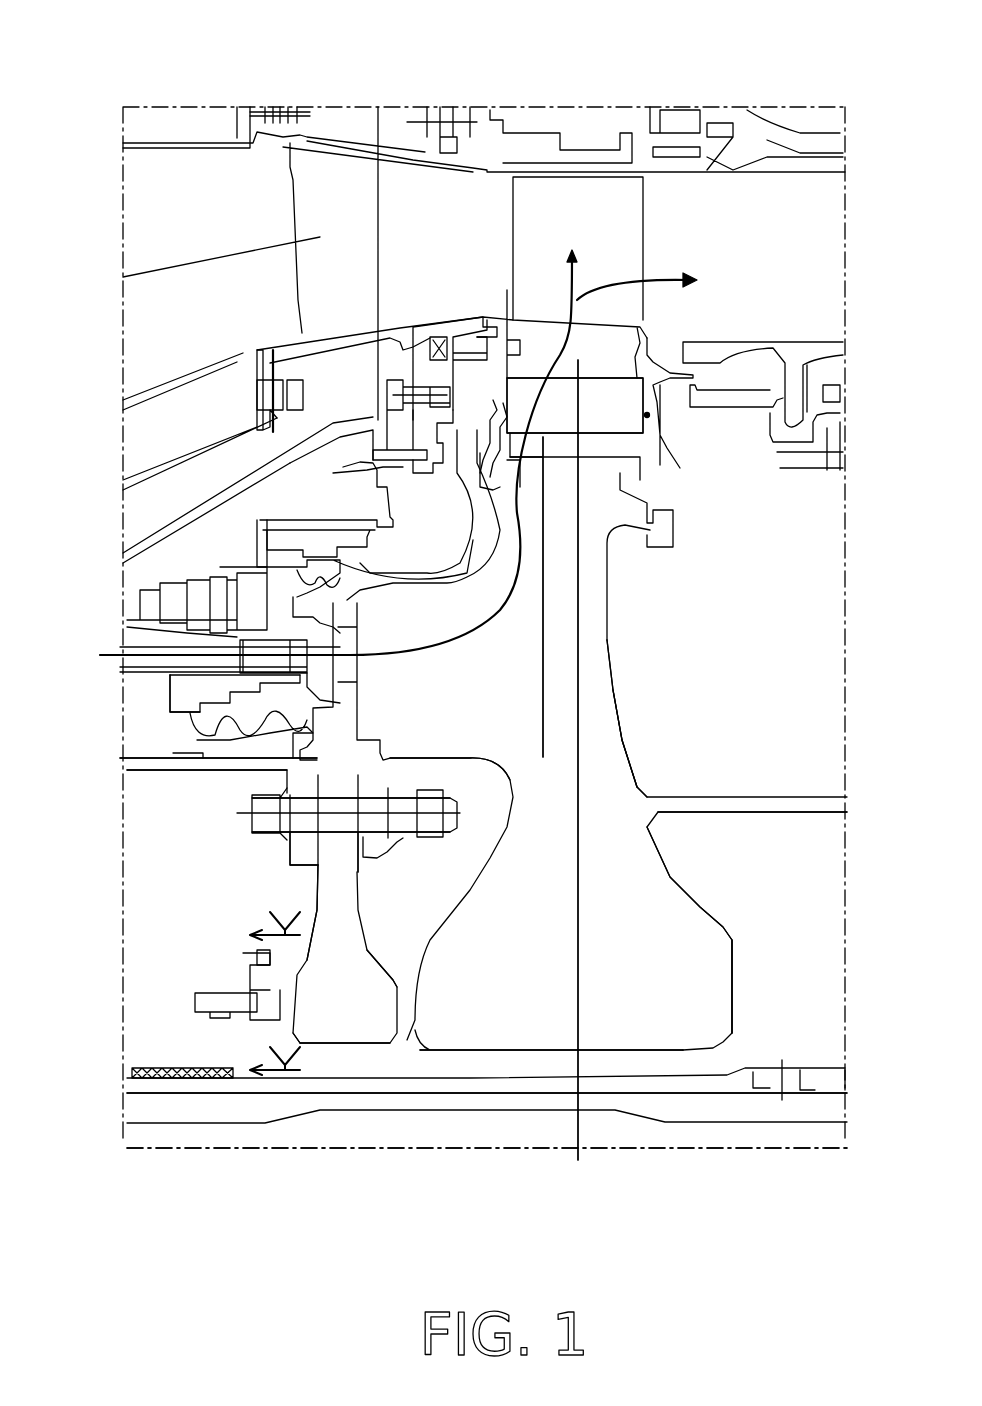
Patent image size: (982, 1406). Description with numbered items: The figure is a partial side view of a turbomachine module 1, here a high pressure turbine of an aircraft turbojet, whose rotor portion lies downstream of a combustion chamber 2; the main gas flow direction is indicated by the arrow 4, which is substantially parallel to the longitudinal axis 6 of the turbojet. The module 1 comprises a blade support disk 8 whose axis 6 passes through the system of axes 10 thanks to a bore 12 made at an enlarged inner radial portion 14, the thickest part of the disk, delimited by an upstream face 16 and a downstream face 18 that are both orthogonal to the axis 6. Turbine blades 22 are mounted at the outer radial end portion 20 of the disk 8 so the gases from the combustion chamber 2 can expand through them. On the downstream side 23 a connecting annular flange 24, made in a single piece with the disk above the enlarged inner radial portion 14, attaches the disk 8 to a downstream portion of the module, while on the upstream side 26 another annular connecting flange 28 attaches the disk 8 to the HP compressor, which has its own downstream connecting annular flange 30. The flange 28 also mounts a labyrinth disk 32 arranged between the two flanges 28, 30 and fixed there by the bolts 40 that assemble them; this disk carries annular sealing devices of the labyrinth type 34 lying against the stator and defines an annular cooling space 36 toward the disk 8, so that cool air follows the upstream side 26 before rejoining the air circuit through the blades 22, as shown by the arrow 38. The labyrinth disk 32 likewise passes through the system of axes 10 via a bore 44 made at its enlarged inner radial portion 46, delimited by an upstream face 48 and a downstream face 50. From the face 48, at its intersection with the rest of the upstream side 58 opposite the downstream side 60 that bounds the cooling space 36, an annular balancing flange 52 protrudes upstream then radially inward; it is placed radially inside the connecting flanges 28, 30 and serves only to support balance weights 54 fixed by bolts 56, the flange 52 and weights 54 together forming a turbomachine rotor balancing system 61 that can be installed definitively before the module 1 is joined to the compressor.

The turbomachine module 1 is at (683, 58).
The combustion chamber 2 is at (193, 202).
The arrow 4 is at (13, 515).
The longitudinal axis 6 is at (210, 1150).
The blade support disk 8 is at (607, 610).
The system of axes 10 is at (615, 1138).
The bore 12 is at (673, 1050).
The enlarged inner radial portion 14 is at (735, 958).
The upstream face 16 is at (407, 1040).
The downstream face 18 is at (733, 1003).
The outer radial end portion 20 is at (597, 470).
The turbine blades 22 is at (570, 213).
The downstream side 23 is at (623, 740).
The connecting annular flange 24 is at (760, 808).
The upstream side 26 is at (538, 663).
The annular connecting flange 28 is at (440, 758).
The downstream connecting annular flange 30 is at (153, 760).
The labyrinth disk 32 is at (310, 887).
The annular sealing devices of the labyrinth type 34 is at (300, 577).
The annular cooling space 36 is at (430, 625).
The arrow 38 is at (720, 290).
The bolts 40 is at (443, 823).
The bore 44 is at (360, 1043).
The enlarged inner radial portion 46 is at (312, 1043).
The upstream face 48 is at (323, 1030).
The downstream face 50 is at (398, 987).
The annular balancing flange 52 is at (243, 983).
The balance weights 54 is at (247, 960).
The bolts 56 is at (227, 1007).
The upstream side 58 is at (315, 913).
The downstream side 60 is at (353, 878).
The turbomachine rotor balancing system 61 is at (207, 983).